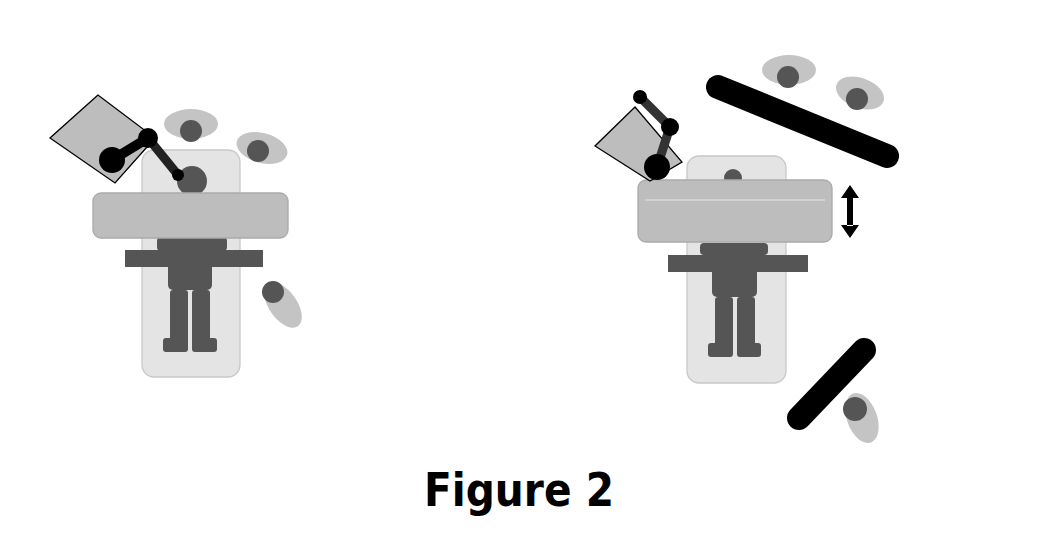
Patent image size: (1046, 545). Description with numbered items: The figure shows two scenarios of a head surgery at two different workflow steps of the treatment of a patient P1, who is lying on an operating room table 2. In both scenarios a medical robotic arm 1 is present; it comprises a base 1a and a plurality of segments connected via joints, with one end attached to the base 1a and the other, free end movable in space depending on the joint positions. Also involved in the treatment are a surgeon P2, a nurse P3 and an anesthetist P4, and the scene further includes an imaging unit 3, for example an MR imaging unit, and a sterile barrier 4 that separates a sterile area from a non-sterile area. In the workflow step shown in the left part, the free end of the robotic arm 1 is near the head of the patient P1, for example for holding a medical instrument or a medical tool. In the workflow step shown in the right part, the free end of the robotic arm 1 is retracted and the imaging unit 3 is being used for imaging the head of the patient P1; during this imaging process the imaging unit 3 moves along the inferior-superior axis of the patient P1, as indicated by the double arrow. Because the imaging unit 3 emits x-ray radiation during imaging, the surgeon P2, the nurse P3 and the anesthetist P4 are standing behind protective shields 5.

The robotic arm 1 is at (68, 118).
The base 1a is at (108, 110).
The operating room table 2 is at (143, 347).
The imaging unit 3 is at (92, 215).
The sterile barrier 4 is at (266, 257).
The protective shields 5 is at (903, 152).
The patient P1 is at (171, 280).
The surgeon P2 is at (199, 103).
The nurse P3 is at (289, 137).
The anesthetist P4 is at (299, 322).